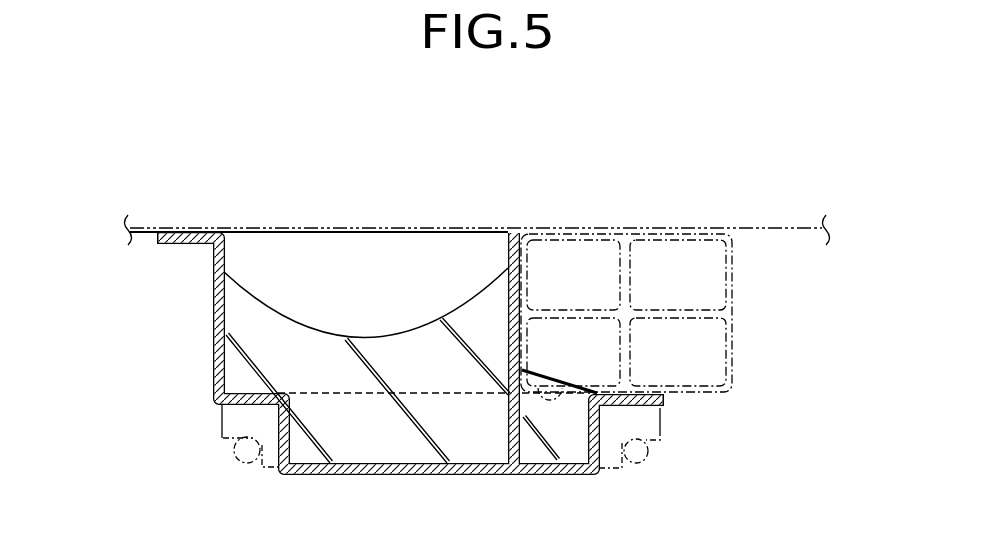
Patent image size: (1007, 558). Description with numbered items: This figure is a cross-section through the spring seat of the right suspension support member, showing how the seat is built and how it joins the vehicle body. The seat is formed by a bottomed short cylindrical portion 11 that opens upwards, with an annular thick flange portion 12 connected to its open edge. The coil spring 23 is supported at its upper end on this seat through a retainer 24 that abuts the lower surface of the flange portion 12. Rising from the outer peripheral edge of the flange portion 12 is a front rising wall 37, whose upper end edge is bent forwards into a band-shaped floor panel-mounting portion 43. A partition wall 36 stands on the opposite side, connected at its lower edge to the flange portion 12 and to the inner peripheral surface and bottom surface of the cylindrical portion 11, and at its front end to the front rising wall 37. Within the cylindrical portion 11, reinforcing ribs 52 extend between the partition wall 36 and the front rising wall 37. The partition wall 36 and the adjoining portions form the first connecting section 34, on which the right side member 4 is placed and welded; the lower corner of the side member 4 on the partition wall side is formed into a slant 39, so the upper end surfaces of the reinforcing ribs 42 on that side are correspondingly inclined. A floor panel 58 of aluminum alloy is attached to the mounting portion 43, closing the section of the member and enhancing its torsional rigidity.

The right side member 4 is at (733, 274).
The bottomed short cylindrical portion 11 is at (402, 474).
The flange portion 12 is at (247, 403).
The coil spring 23 is at (240, 457).
The retainer 24 is at (268, 470).
The first connecting section 34 is at (642, 388).
The partition wall 36 is at (506, 322).
The front rising wall 37 is at (217, 328).
The slant 39 is at (566, 388).
The reinforcing ribs 42 is at (560, 442).
The floor panel-mounting portion 43 is at (183, 241).
The reinforcing ribs 52 is at (307, 337).
The floor panel 58 is at (772, 229).